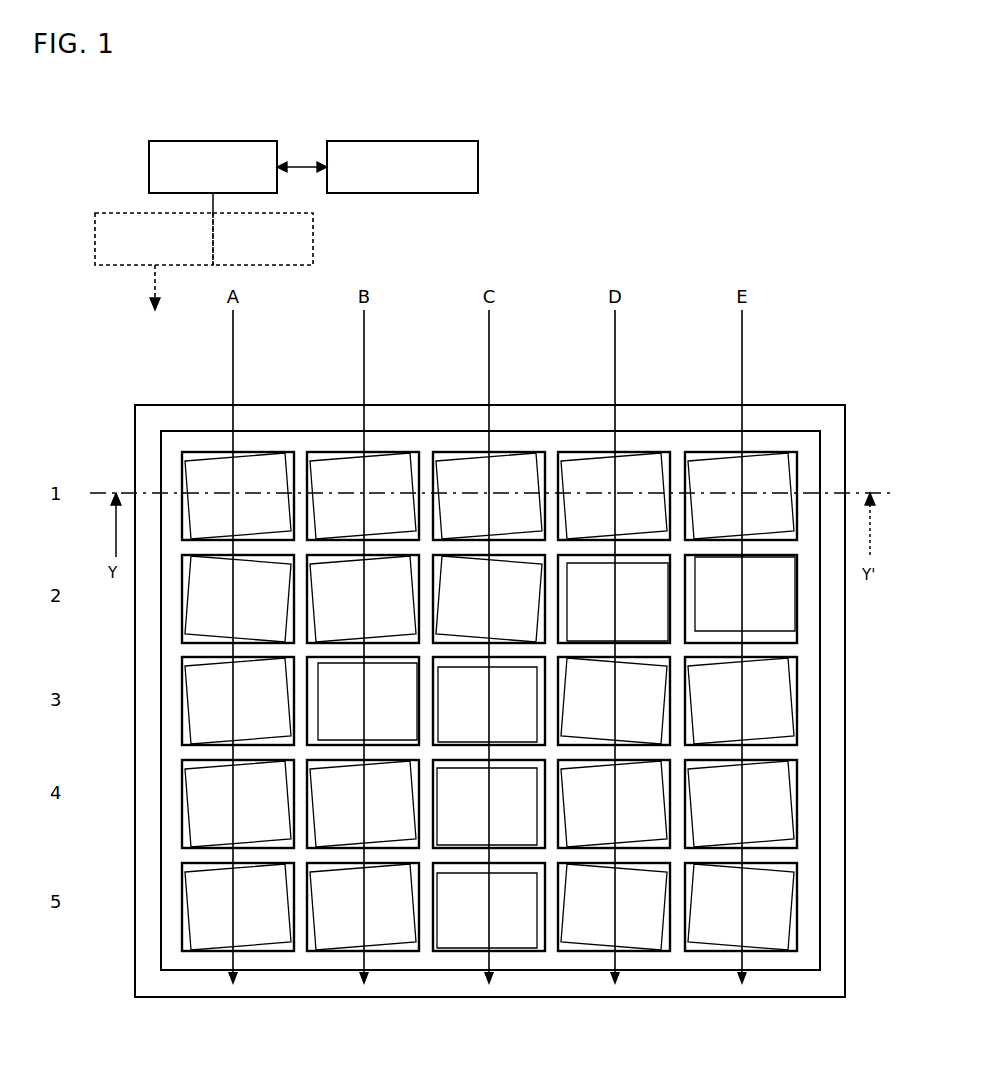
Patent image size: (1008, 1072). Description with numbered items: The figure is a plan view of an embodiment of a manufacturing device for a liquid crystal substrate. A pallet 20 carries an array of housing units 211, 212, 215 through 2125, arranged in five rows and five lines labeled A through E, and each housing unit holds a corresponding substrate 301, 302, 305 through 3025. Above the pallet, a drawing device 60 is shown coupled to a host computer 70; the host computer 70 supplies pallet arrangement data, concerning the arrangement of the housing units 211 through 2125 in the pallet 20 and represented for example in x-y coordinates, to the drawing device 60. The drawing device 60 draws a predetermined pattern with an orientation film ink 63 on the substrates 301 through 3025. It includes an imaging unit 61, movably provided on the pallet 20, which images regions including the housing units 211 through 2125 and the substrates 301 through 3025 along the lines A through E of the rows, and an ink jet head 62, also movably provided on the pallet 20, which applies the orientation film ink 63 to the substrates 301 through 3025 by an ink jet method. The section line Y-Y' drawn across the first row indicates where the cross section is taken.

The pallet 20 is at (178, 431).
The housing unit 211 is at (198, 462).
The housing unit 212 is at (334, 462).
The housing unit 215 is at (708, 464).
The housing unit 2125 is at (720, 948).
The substrate 301 is at (270, 468).
The substrate 302 is at (398, 468).
The substrate 305 is at (773, 470).
The substrate 3025 is at (765, 926).
The drawing device 60 is at (177, 141).
The imaging unit 61 is at (298, 213).
The ink jet head 62 is at (116, 213).
The orientation film ink 63 is at (152, 290).
The host computer 70 is at (353, 141).